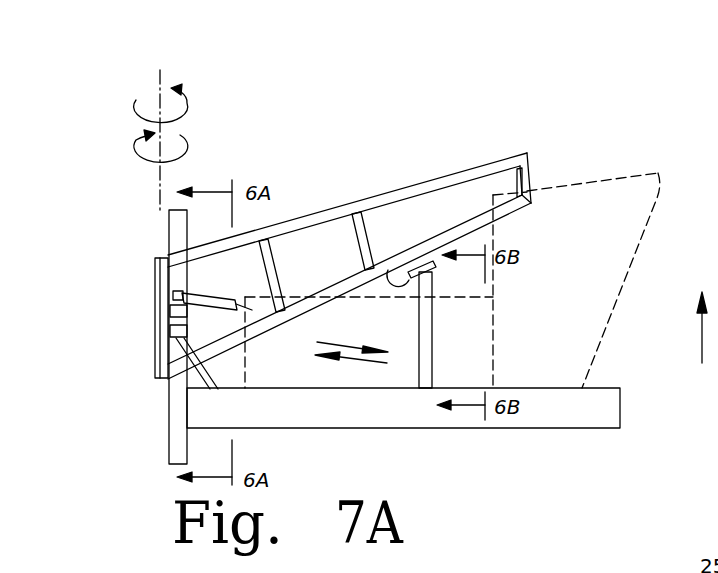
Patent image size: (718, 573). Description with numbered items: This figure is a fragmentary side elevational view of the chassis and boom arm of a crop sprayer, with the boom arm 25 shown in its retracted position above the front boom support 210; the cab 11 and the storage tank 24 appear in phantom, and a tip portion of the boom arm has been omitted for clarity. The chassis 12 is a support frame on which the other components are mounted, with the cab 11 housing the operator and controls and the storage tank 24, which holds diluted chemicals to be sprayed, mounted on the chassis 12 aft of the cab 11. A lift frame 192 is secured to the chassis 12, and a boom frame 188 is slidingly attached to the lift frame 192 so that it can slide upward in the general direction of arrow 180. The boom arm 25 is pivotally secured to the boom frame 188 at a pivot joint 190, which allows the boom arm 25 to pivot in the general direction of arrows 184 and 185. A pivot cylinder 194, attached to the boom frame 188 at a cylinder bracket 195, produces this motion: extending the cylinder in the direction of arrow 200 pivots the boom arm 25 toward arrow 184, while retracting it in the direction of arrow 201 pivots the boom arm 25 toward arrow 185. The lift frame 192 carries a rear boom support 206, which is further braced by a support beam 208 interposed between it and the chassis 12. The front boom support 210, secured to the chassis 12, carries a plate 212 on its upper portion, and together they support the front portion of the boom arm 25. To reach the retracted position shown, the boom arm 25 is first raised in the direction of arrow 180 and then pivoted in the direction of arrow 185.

The cab 11 is at (632, 264).
The chassis 12 is at (620, 407).
The storage tank 24 is at (494, 348).
The boom arm 25 is at (470, 173).
The arrow 180 is at (700, 333).
The arrow 184 is at (188, 150).
The arrow 185 is at (188, 96).
The boom frame 188 is at (158, 290).
The pivot joint 190 is at (156, 258).
The lift frame 192 is at (170, 416).
The pivot cylinder 194 is at (228, 295).
The cylinder bracket 195 is at (170, 310).
The arrow 200 is at (348, 345).
The arrow 201 is at (358, 360).
The rear boom support 206 is at (170, 334).
The support beam 208 is at (215, 380).
The front boom support 210 is at (417, 368).
The plate 212 is at (398, 253).